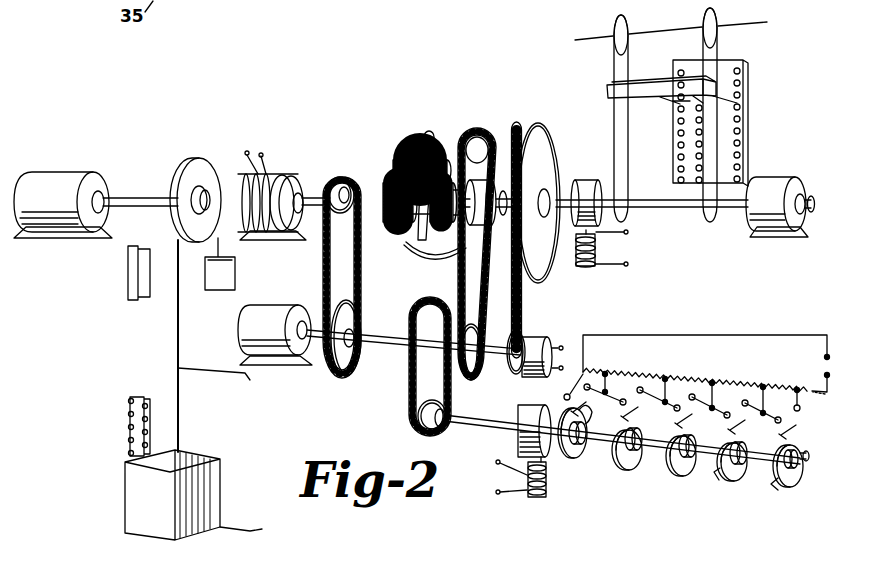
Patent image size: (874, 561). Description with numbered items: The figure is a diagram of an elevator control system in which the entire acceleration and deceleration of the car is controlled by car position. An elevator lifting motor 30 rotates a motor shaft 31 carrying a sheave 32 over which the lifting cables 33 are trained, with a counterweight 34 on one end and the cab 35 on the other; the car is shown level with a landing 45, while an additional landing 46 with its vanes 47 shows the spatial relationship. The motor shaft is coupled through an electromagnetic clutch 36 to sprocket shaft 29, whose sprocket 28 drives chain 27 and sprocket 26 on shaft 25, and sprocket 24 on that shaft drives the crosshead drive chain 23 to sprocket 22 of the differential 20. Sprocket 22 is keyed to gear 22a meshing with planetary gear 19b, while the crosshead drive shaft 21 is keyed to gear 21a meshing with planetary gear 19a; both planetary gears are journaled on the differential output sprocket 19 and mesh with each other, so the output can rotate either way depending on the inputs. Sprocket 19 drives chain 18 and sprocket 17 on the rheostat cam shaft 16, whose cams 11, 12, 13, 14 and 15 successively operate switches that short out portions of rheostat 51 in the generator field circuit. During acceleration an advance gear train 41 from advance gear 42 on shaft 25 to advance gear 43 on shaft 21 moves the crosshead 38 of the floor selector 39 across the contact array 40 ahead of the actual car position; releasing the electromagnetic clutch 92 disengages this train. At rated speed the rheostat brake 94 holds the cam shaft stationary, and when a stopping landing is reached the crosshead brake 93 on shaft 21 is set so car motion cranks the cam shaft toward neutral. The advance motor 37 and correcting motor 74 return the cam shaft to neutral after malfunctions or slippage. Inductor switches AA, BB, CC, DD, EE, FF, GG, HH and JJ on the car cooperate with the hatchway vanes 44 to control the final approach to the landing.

The cam 11 is at (568, 457).
The cam 12 is at (627, 463).
The cam 13 is at (683, 470).
The cam 14 is at (728, 476).
The cam 15 is at (786, 481).
The rheostat cam shaft 16 is at (460, 424).
The sprocket 17 is at (437, 398).
The chain 18 is at (408, 365).
The differential output sprocket 19 is at (429, 260).
The planetary gear 19a is at (394, 170).
The planetary gear 19b is at (442, 152).
The differential 20 is at (411, 198).
The crosshead drive shaft 21 is at (656, 208).
The gear 21a is at (400, 222).
The sprocket 22 is at (487, 132).
The gear 22a is at (440, 218).
The chain 23 is at (488, 298).
The sprocket 24 is at (474, 373).
The shaft 25 is at (394, 343).
The sprocket 26 is at (342, 363).
The chain 27 is at (358, 290).
The sprocket 28 is at (345, 182).
The sprocket shaft 29 is at (311, 195).
The elevator lifting motor 30 is at (65, 178).
The motor shaft 31 is at (155, 196).
The sheave 32 is at (207, 166).
The elevator lifting cables 33 is at (180, 306).
The counterweight 34 is at (236, 266).
The cab 35 is at (218, 478).
The clutch 36 is at (262, 180).
The advance motor 37 is at (791, 178).
The crosshead 38 is at (611, 87).
The floor selector machine 39 is at (668, 29).
The contact array 40 is at (748, 86).
The advance gear train 41 is at (548, 249).
The advance gear 42 is at (532, 326).
The advance gear 43 is at (548, 156).
The ferromagnetic vanes 44 is at (131, 397).
The landing 45 is at (256, 529).
The landing 46 is at (231, 382).
The vanes 47 is at (131, 273).
The rheostat 51 is at (695, 373).
The correcting motor 74 is at (272, 312).
The electromagnetic clutch 92 is at (548, 340).
The crosshead brake 93 is at (600, 248).
The rheostat brake 94 is at (511, 477).
The inductor switch AA is at (129, 401).
The inductor switch BB is at (129, 414).
The inductor switch CC is at (161, 402).
The inductor switch DD is at (129, 427).
The inductor switch EE is at (163, 438).
The inductor switch FF is at (159, 383).
The inductor switch GG is at (164, 420).
The inductor switch HH is at (129, 440).
The inductor switch JJ is at (129, 453).